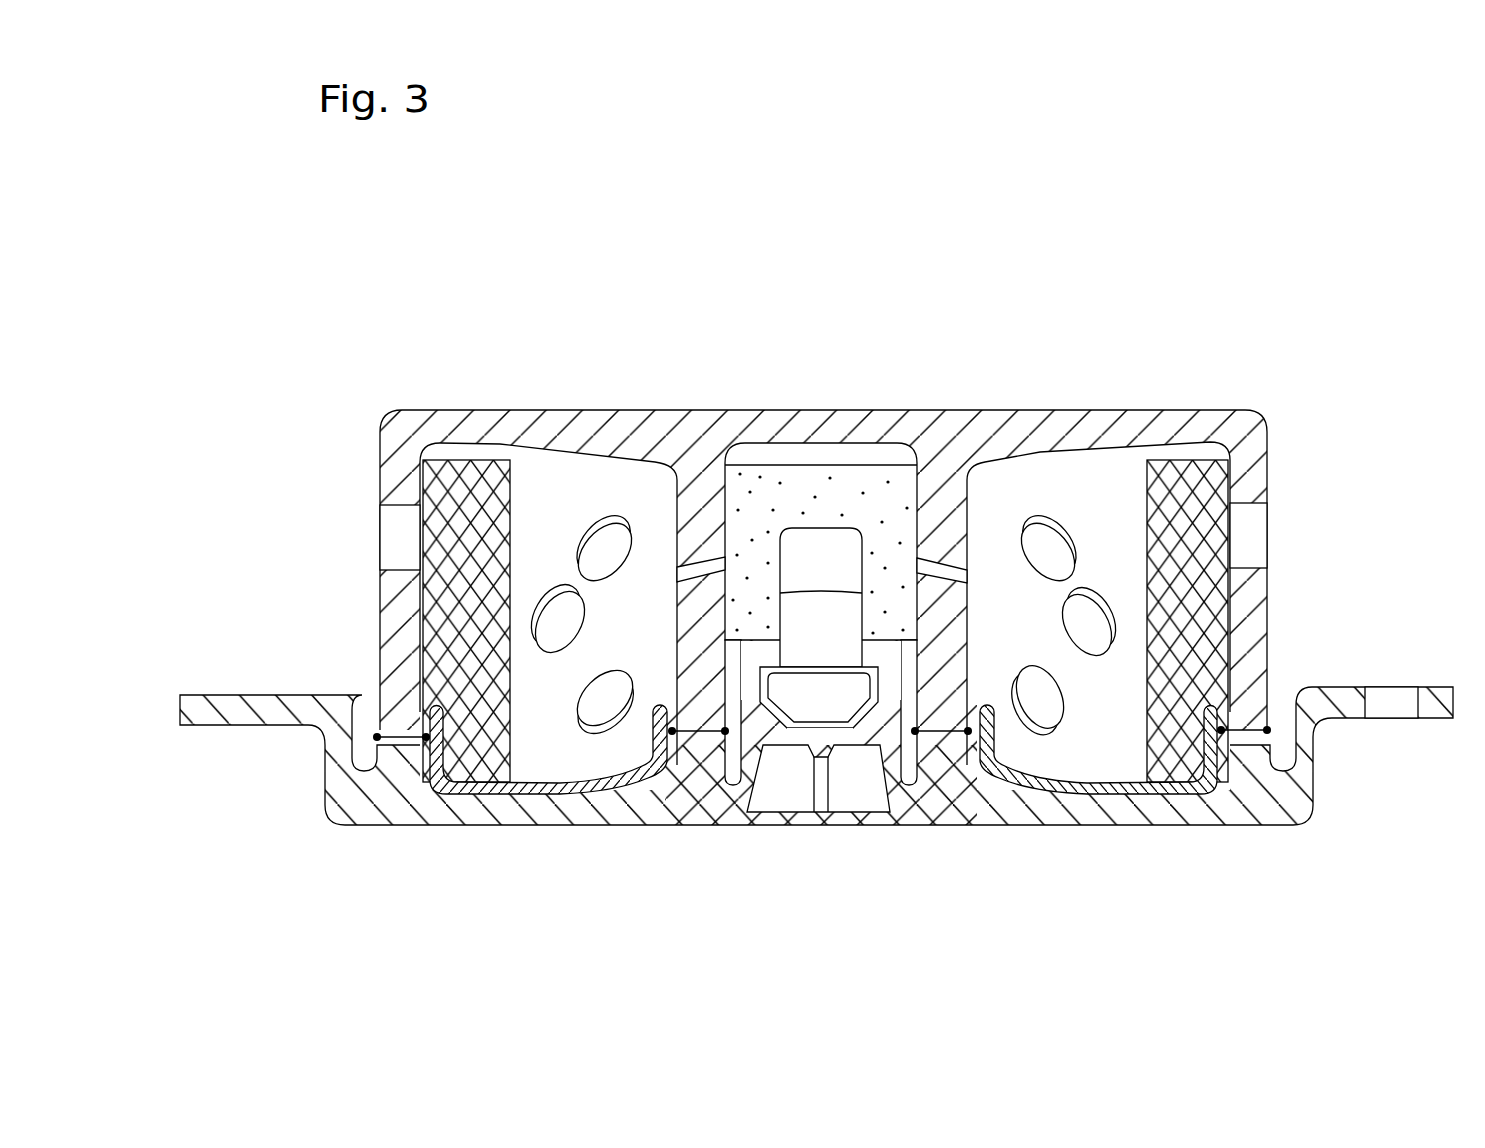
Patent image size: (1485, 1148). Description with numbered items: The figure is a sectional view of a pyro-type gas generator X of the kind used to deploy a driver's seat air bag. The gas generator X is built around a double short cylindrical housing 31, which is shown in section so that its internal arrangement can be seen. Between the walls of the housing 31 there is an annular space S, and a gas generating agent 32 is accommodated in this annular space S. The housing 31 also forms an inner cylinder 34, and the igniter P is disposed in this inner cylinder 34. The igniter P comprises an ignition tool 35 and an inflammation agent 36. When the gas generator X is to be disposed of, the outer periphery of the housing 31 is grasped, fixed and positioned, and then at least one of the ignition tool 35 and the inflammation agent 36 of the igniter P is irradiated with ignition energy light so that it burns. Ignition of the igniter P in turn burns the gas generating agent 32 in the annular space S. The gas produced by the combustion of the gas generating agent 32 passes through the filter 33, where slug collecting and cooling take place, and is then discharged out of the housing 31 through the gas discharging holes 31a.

The pyro-type gas generator X is at (988, 347).
The housing 31 is at (548, 432).
The gas discharging holes 31a is at (1253, 525).
The gas generating agent 32 is at (1058, 550).
The filter 33 is at (1220, 632).
The inner cylinder 34 is at (695, 717).
The ignition tool 35 is at (800, 692).
The inflammation agent 36 is at (895, 620).
The annular space S is at (567, 518).
The igniter P is at (805, 753).